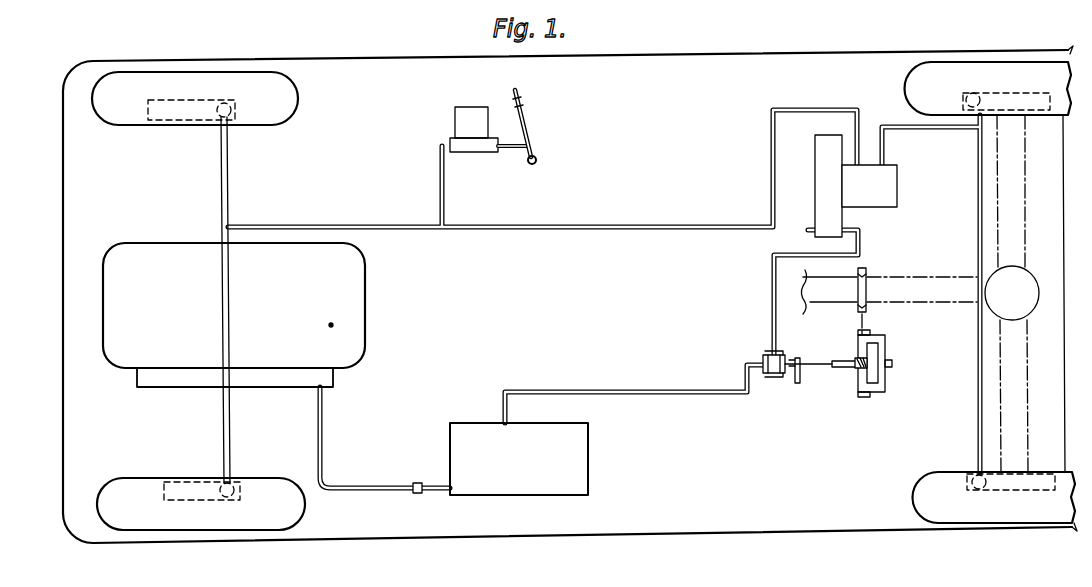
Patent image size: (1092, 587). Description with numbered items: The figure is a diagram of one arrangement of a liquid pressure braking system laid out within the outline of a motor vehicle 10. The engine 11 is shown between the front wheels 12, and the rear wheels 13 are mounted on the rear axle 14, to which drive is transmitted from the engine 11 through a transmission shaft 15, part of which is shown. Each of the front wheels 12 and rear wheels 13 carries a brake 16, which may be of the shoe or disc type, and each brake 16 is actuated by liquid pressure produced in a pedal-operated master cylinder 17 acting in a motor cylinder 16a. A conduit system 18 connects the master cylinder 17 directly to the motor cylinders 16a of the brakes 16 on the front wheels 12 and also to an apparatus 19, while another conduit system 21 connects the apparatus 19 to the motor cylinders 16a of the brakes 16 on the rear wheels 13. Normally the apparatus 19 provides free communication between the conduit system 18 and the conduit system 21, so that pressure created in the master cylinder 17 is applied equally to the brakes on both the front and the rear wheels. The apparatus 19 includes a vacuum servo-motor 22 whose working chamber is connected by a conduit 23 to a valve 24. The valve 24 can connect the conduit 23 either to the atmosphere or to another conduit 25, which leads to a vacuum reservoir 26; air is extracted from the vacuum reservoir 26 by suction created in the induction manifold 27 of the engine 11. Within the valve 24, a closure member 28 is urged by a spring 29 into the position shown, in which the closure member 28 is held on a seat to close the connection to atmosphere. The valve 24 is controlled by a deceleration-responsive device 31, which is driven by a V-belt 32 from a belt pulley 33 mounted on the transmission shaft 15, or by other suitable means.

The motor vehicle outline 10 is at (662, 75).
The engine 11 is at (356, 322).
The front wheels 12 is at (233, 78).
The rear wheels 13 is at (1030, 67).
The rear axle 14 is at (1005, 216).
The transmission shaft 15 is at (832, 296).
The brake 16 is at (181, 100).
The motor cylinder 16a is at (235, 100).
The pedal-operated master cylinder 17 is at (488, 146).
The conduit system 18 is at (622, 225).
The apparatus 19 is at (900, 176).
The conduit system 21 is at (977, 183).
The vacuum servo-motor 22 is at (821, 176).
The conduit 23 is at (785, 254).
The valve 24 is at (772, 374).
The conduit 25 is at (620, 370).
The vacuum reservoir 26 is at (580, 468).
The induction manifold 27 is at (337, 380).
The closure member 28 is at (783, 374).
The spring 29 is at (765, 357).
The deceleration-responsive device 31 is at (873, 393).
The V-belt 32 is at (867, 317).
The belt pulley 33 is at (868, 276).